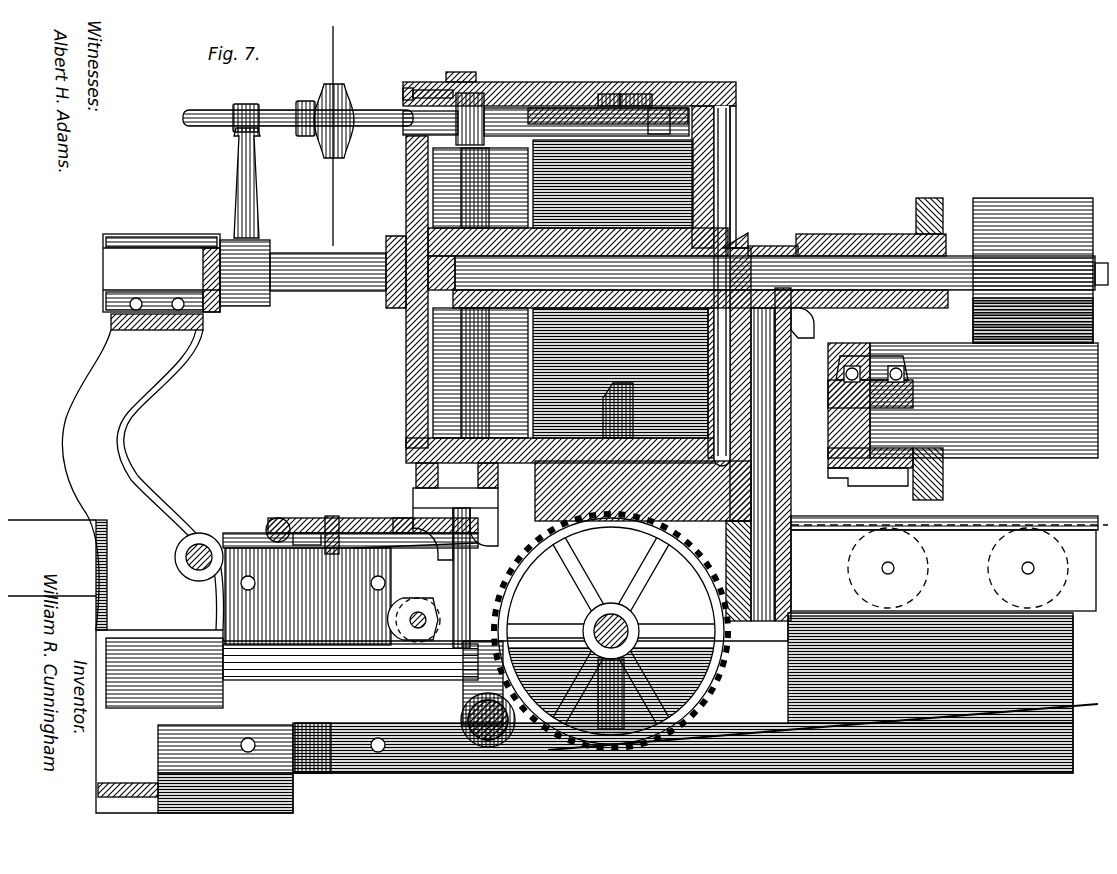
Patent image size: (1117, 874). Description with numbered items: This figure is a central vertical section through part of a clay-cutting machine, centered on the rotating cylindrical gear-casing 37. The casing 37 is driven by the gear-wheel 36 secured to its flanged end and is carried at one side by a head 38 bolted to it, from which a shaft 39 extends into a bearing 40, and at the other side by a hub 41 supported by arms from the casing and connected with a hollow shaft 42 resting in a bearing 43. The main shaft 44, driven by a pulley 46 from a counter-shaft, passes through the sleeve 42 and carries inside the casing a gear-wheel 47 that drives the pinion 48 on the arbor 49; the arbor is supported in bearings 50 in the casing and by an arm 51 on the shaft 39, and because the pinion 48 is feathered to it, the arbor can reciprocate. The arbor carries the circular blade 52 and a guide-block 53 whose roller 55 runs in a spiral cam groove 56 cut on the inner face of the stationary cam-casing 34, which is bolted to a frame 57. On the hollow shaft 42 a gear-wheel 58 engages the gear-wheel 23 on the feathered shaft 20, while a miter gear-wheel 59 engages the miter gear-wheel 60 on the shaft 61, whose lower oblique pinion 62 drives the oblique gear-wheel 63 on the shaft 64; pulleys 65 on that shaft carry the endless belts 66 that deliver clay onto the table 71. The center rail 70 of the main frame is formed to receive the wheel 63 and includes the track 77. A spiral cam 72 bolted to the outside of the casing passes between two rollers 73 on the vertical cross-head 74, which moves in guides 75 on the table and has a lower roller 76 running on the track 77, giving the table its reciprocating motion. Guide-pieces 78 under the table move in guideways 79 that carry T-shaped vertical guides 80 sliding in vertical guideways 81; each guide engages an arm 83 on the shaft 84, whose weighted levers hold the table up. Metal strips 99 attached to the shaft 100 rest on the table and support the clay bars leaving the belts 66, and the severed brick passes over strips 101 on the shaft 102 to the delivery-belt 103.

The shaft 20 is at (1015, 400).
The gear-wheel 23 is at (935, 474).
The cam-casing 34 is at (668, 78).
The gear-wheel 36 is at (724, 118).
The cylindrical gear-casing 37 is at (570, 380).
The head 38 is at (400, 185).
The shaft 39 is at (328, 281).
The bearing 40 is at (186, 273).
The hub 41 is at (600, 296).
The hollow shaft 42 is at (748, 240).
The bearing 43 is at (846, 228).
The shaft 44 is at (1098, 248).
The pulley 46 is at (1033, 270).
The gear-wheel 47 is at (405, 222).
The pinion 48 is at (462, 76).
The arbor 49 is at (540, 86).
The bearings 50 is at (432, 82).
The arm 51 is at (232, 178).
The disk or circular blade 52 is at (327, 150).
The guide-block 53 is at (636, 86).
The roller 55 is at (602, 86).
The spiral or cam groove 56 is at (615, 420).
The frame 57 is at (1030, 455).
The gear-wheel 58 is at (920, 190).
The miter gear-wheel 59 is at (728, 228).
The miter gear-wheel 60 is at (806, 318).
The shaft 61 is at (858, 382).
The oblique toothed pinion 62 is at (944, 563).
The oblique toothed gear-wheel 63 is at (660, 542).
The shaft 64 is at (632, 623).
The pulleys 65 is at (605, 693).
The endless belts or aprons 66 is at (1074, 700).
The metal rail 70 is at (958, 568).
The table 71 is at (328, 525).
The spiral-shaped cam 72 is at (408, 462).
The rollers 73 is at (470, 488).
The vertical cross-head 74 is at (480, 496).
The guides 75 is at (405, 622).
The roller 76 is at (403, 656).
The track 77 is at (392, 625).
The guide-pieces 78 is at (415, 553).
The guideways 79 is at (240, 565).
The T-shaped vertical guide 80 is at (308, 596).
The vertical guideways 81 is at (340, 637).
The arm 83 is at (476, 734).
The shaft 84 is at (492, 740).
The metal strips 99 is at (415, 498).
The shaft 100 is at (470, 484).
The strips 101 is at (248, 512).
The shaft 102 is at (278, 506).
The delivery-belt 103 is at (52, 512).